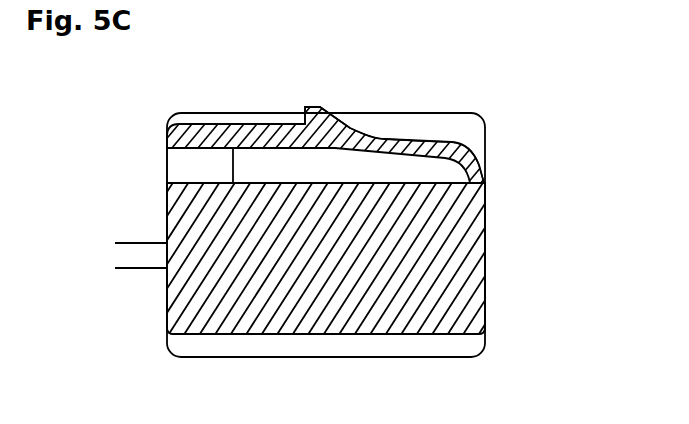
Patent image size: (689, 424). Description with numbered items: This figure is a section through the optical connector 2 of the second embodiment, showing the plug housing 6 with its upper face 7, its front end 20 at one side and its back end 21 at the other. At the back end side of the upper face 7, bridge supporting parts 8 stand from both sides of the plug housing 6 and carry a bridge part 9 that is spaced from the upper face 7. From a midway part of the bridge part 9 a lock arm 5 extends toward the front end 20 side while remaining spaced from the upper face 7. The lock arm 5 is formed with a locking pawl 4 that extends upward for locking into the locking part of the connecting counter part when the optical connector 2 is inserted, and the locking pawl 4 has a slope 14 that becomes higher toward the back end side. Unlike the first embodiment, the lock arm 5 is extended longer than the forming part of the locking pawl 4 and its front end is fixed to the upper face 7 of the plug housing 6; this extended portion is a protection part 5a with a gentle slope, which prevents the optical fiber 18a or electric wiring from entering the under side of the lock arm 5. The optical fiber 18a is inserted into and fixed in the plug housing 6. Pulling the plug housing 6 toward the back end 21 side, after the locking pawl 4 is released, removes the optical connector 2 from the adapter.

The optical connector 2 is at (548, 147).
The locking pawl 4 is at (326, 110).
The lock arm 5 is at (275, 130).
The protection part 5a is at (418, 138).
The plug housing 6 is at (228, 318).
The upper face 7 is at (373, 180).
The bridge supporting parts 8 is at (175, 165).
The bridge part 9 is at (203, 130).
The slope 14 is at (330, 121).
The optical fiber 18a is at (133, 250).
The front end 20 is at (487, 212).
The back end 21 is at (167, 290).